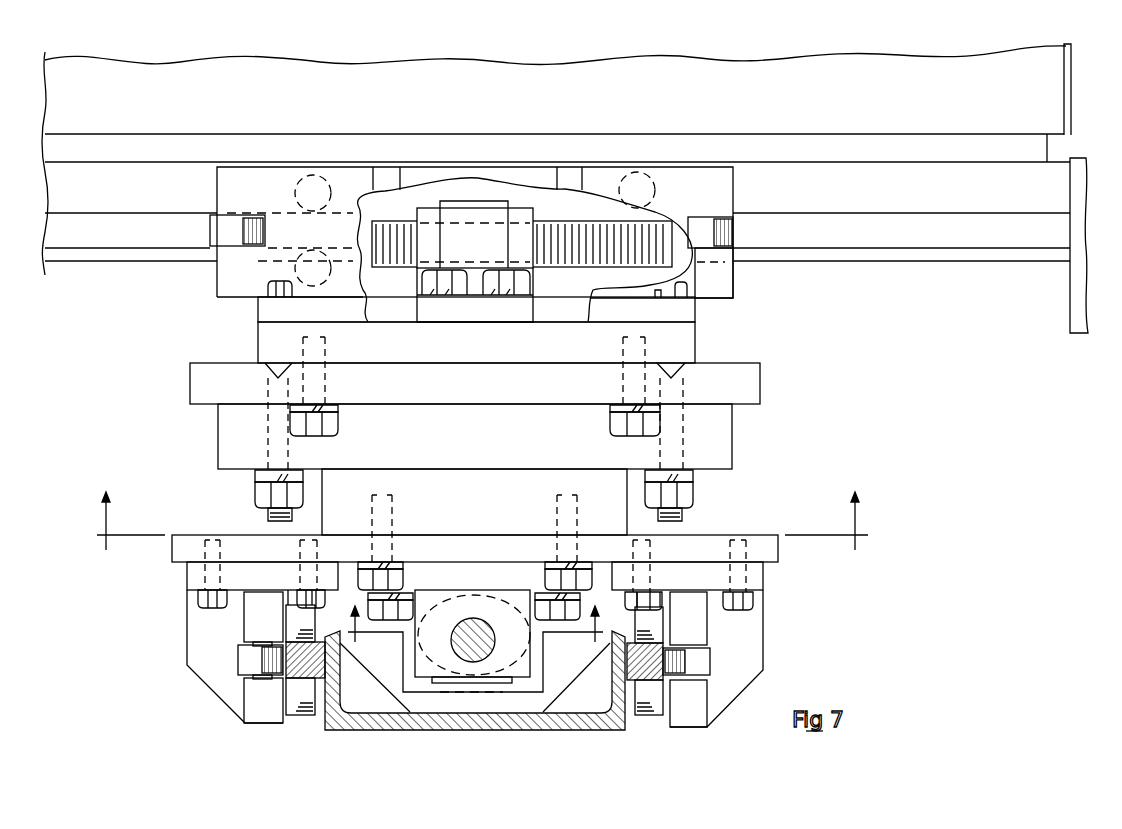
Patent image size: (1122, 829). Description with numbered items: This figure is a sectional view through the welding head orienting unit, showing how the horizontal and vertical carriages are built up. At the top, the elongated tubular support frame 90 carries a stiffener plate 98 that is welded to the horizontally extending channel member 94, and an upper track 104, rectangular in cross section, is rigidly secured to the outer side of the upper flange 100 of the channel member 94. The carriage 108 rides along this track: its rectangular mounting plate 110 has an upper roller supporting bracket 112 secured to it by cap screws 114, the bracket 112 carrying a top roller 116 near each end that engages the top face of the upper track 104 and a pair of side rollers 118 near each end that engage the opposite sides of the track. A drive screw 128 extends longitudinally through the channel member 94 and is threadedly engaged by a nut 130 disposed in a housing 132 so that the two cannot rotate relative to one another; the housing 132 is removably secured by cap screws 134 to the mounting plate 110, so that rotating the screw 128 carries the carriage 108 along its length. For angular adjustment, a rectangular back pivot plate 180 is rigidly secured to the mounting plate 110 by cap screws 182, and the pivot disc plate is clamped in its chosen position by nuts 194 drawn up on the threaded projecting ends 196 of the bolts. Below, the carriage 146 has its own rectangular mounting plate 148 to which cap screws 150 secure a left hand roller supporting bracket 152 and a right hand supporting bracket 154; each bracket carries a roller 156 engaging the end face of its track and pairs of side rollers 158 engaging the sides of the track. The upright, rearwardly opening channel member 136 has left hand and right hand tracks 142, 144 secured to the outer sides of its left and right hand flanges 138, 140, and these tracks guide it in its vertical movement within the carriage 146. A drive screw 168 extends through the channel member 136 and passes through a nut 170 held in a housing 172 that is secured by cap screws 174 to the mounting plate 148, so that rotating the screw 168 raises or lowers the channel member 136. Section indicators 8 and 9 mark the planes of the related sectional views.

The support frame 90 is at (797, 68).
The stiffener plate 98 is at (773, 148).
The upper track 104 is at (900, 242).
The channel member 94 is at (976, 266).
The upper flange 100 is at (1025, 258).
The cap screws 114 is at (264, 285).
The side rollers 118 is at (310, 177).
The top roller 116 is at (218, 228).
The upper roller supporting bracket 112 is at (727, 292).
The drive screw 128 is at (600, 222).
The housing 132 is at (428, 208).
The nut 130 is at (478, 201).
The cap screws 134 is at (418, 278).
The carriage 108 is at (697, 321).
The mounting plate 110 is at (697, 351).
The back pivot plate 180 is at (762, 386).
The cap screws 182 is at (340, 432).
The nuts 194 is at (257, 497).
The threaded projecting ends 196 is at (268, 516).
The mounting plate 148 is at (782, 540).
The section line 9- 9 is at (482, 536).
The carriage 146 is at (764, 573).
The cap screws 150 is at (198, 601).
The cap screws 174 is at (545, 604).
The housing 172 is at (527, 678).
The drive screw 168 is at (470, 620).
The nut 170 is at (483, 684).
The channel member 136 is at (420, 712).
The left hand flange 138 is at (320, 718).
The right hand flange 140 is at (626, 714).
The section line 8- 8 is at (475, 633).
The left hand roller supporting bracket 152 is at (186, 664).
The roller 156 is at (240, 664).
The side rollers 158 is at (296, 607).
The left hand track 142 is at (290, 680).
The right hand track 144 is at (648, 681).
The right hand supporting bracket 154 is at (765, 670).